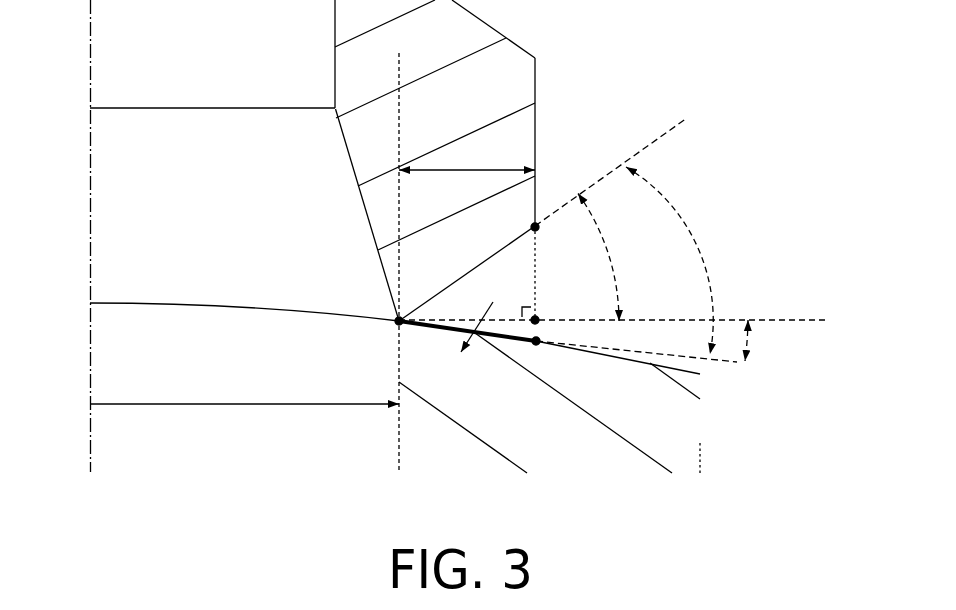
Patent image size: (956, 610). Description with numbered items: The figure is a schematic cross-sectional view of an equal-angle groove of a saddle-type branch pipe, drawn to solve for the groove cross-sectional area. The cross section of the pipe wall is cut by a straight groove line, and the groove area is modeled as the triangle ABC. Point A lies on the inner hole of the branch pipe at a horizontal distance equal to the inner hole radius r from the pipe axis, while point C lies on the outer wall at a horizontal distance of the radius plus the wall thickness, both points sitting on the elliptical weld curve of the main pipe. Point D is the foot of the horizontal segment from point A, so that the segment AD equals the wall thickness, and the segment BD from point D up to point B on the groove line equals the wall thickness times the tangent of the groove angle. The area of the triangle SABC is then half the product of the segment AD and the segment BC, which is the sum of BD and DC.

The point A is at (388, 334).
The point B is at (522, 220).
The point C is at (531, 354).
The point D is at (546, 310).
The radius of the inner hole of the branch pipe r is at (244, 384).
The area of the triangle ABC SABC is at (460, 350).